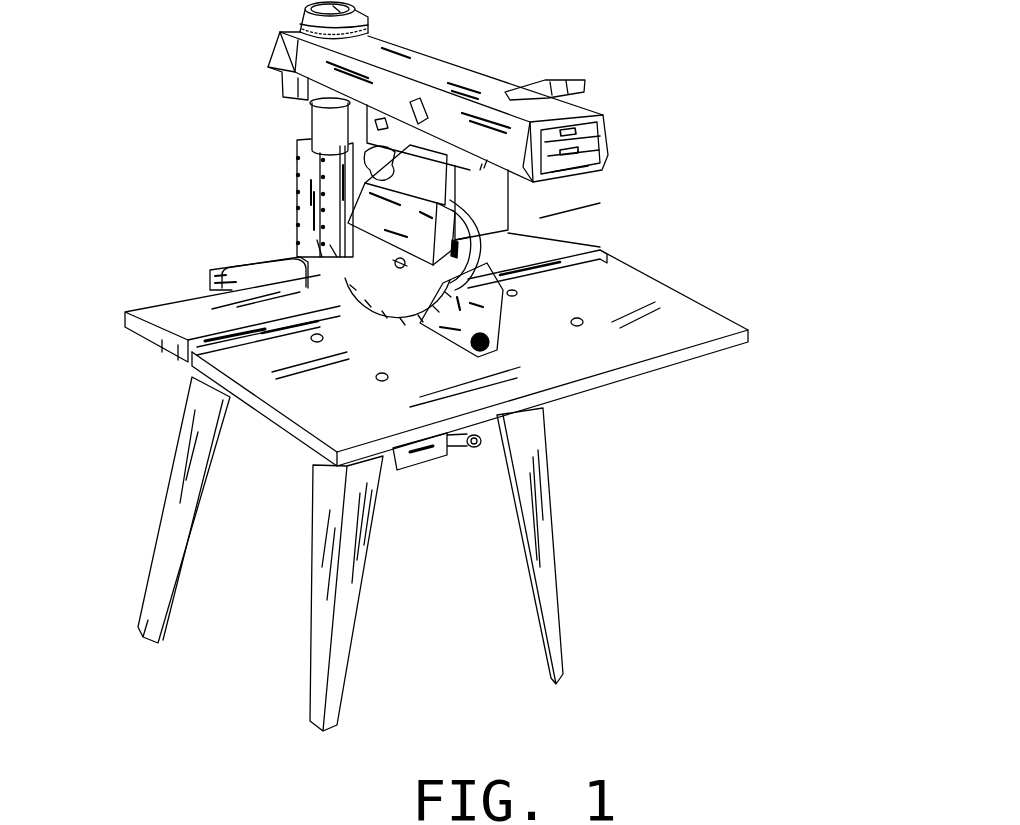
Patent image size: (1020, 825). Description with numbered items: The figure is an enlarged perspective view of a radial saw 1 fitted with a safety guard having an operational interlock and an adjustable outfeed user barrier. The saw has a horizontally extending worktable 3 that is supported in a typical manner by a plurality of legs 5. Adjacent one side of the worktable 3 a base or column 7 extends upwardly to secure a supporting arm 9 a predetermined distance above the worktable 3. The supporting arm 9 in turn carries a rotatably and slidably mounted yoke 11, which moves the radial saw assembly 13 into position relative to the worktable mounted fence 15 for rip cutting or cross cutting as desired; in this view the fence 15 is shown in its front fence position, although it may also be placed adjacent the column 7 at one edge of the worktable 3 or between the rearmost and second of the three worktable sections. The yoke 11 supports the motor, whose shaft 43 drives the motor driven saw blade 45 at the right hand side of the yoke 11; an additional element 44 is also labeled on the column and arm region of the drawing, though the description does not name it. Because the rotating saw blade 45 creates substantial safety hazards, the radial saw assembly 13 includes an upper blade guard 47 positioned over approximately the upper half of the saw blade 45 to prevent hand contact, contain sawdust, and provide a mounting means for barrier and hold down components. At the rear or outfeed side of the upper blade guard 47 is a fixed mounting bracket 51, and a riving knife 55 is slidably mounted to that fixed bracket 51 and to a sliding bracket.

The radial saw 1 is at (650, 122).
The worktable 3 is at (678, 323).
The legs 5 is at (168, 552).
The base or column 7 is at (313, 182).
The supporting arm 9 is at (432, 68).
The yoke 11 is at (523, 210).
The radial saw assembly 13 is at (520, 317).
The worktable mounted fence 15 is at (127, 330).
The shaft 43 is at (405, 262).
The elevating post 44 is at (335, 139).
The motor driven saw blade 45 is at (375, 300).
The upper blade guard 47 is at (440, 194).
The fixed mounting bracket 51 is at (490, 216).
The riving knife 55 is at (460, 322).